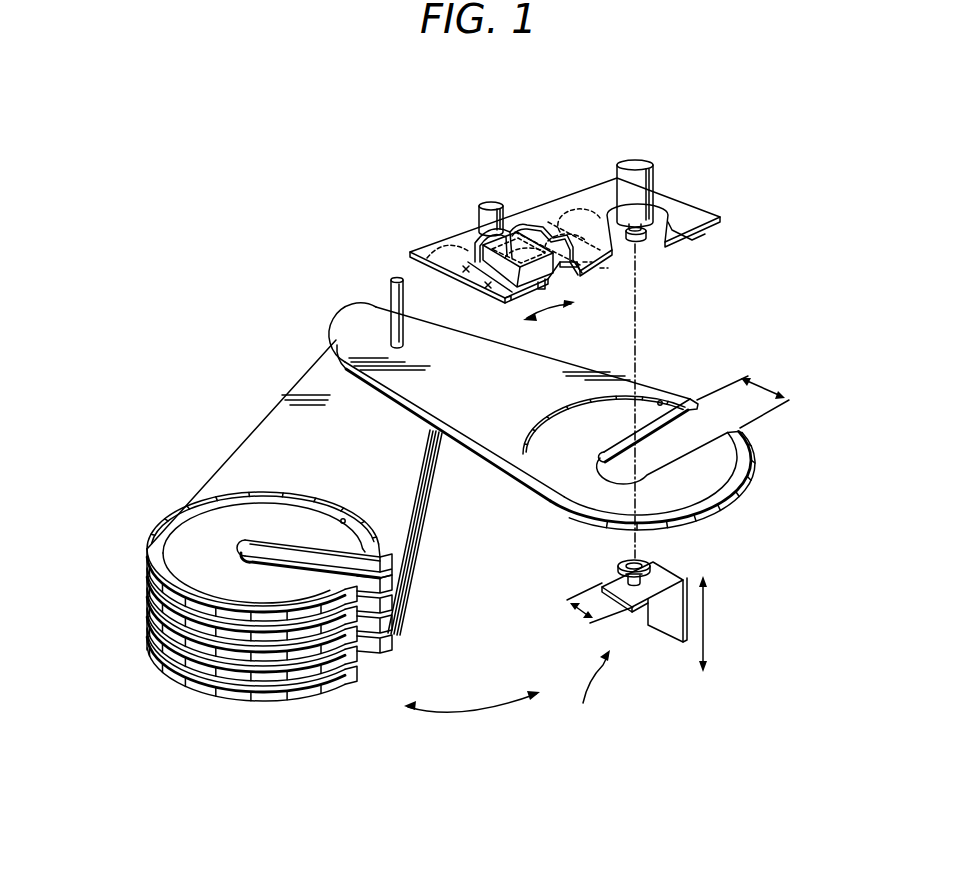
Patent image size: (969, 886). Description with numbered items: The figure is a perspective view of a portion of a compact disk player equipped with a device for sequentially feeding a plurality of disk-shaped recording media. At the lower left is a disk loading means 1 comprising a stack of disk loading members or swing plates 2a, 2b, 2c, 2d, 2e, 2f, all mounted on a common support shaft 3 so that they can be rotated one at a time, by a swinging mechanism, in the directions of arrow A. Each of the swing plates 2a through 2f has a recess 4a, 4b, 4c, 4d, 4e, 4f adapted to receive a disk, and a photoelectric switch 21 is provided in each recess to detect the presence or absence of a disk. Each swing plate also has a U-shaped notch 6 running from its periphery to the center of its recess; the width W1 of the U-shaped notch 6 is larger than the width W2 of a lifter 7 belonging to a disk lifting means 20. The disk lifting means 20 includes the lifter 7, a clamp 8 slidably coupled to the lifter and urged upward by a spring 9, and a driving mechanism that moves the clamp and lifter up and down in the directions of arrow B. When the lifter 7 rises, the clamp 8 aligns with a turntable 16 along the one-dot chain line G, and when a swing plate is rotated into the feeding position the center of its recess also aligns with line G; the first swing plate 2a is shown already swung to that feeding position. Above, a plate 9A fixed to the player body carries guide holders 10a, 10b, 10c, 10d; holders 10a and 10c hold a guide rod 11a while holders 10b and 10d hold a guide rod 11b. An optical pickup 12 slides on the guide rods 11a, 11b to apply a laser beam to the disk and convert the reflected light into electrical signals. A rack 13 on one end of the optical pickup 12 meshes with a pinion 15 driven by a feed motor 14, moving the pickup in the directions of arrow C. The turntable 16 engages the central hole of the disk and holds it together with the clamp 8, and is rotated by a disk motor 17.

The disk loading means 1 is at (212, 438).
The first swing plate 2a is at (496, 473).
The swing plate 2b is at (147, 552).
The swing plate 2c is at (147, 578).
The swing plate 2d is at (147, 604).
The swing plate 2e is at (147, 628).
The swing plate 2f is at (147, 650).
The support shaft 3 is at (389, 294).
The recess 4a is at (718, 488).
The recess 4b is at (306, 492).
The recess 4c is at (393, 584).
The recess 4d is at (393, 605).
The recess 4e is at (391, 626).
The recess 4f is at (380, 648).
The U-shaped notch 6 is at (692, 451).
The lifter 7 is at (664, 639).
The clamp 8 is at (620, 564).
The spring 9 is at (626, 582).
The plate 9A is at (707, 240).
The guide holder 10a is at (448, 262).
The guide holder 10b is at (496, 304).
The guide holder 10c is at (583, 232).
The guide holder 10d is at (602, 282).
The guide rod 11a is at (524, 248).
The guide rod 11b is at (556, 246).
The optical pickup 12 is at (517, 232).
The rack 13 is at (470, 250).
The feed motor 14 is at (485, 204).
The pinion 15 is at (478, 240).
The turntable 16 is at (690, 238).
The disk motor 17 is at (640, 161).
The disk lifting means 20 is at (589, 690).
The photoelectric switch 21 is at (661, 399).
The arrow A is at (461, 715).
The arrow B is at (706, 625).
The arrow C is at (552, 309).
The one-dot chain line G is at (640, 311).
The width of the U-shaped notch W1 is at (743, 399).
The width of the lifter W2 is at (593, 611).